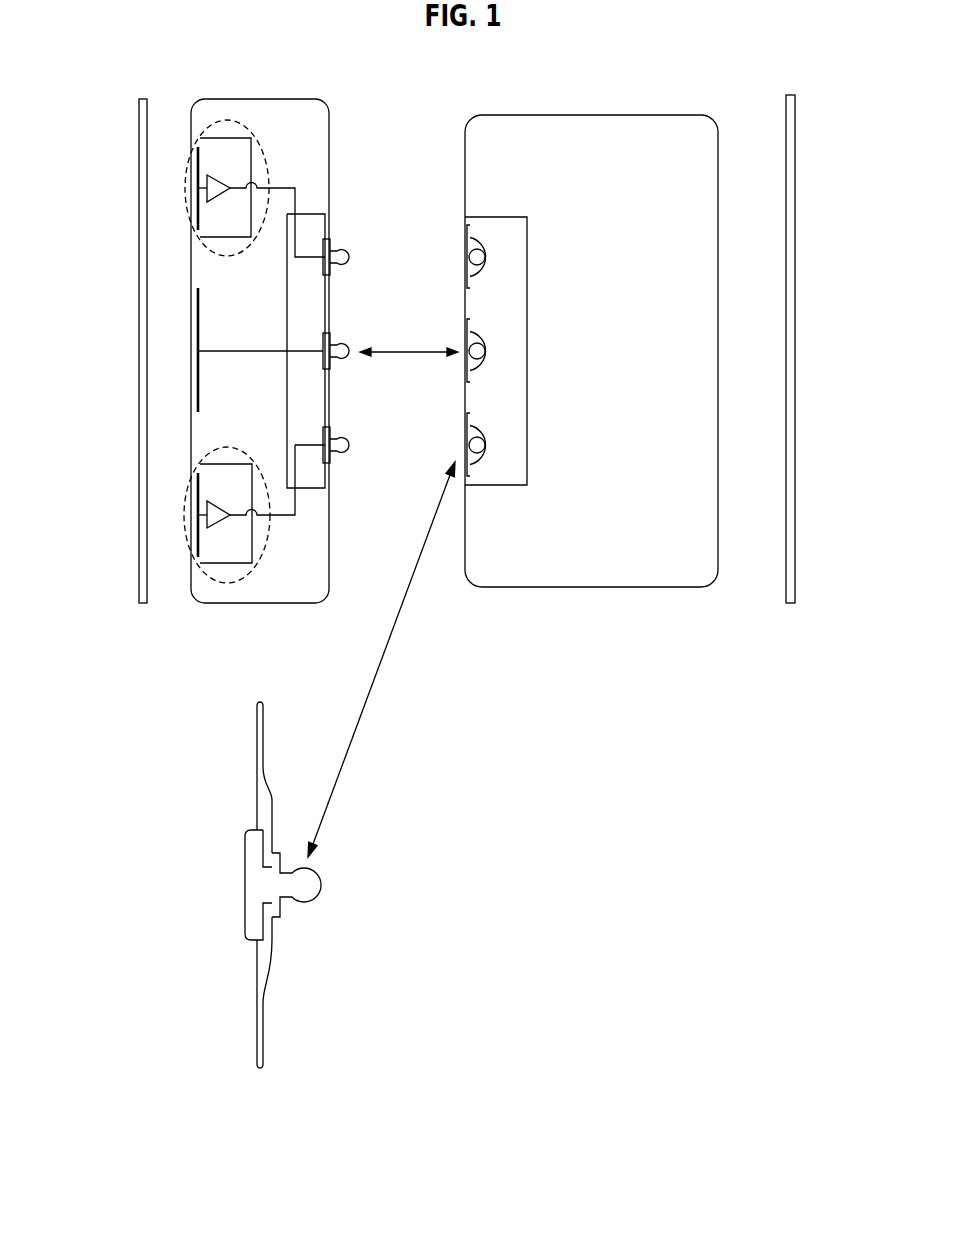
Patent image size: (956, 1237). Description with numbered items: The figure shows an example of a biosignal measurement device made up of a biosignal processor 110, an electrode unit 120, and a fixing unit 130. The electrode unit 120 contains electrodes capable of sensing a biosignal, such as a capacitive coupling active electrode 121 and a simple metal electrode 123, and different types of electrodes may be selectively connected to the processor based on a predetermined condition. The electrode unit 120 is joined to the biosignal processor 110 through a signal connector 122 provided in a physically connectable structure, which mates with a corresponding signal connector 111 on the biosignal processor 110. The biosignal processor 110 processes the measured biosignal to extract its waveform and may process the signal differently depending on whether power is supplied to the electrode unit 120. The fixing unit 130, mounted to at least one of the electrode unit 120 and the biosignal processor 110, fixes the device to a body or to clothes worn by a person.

The biosignal processor 110 is at (590, 115).
The signal connector 111 is at (528, 462).
The electrode unit 120 is at (261, 98).
The capacitive coupling active electrode 121 is at (188, 206).
The signal connector 122 is at (312, 213).
The metal electrode 123 is at (260, 703).
The fixing unit 130 is at (140, 493).